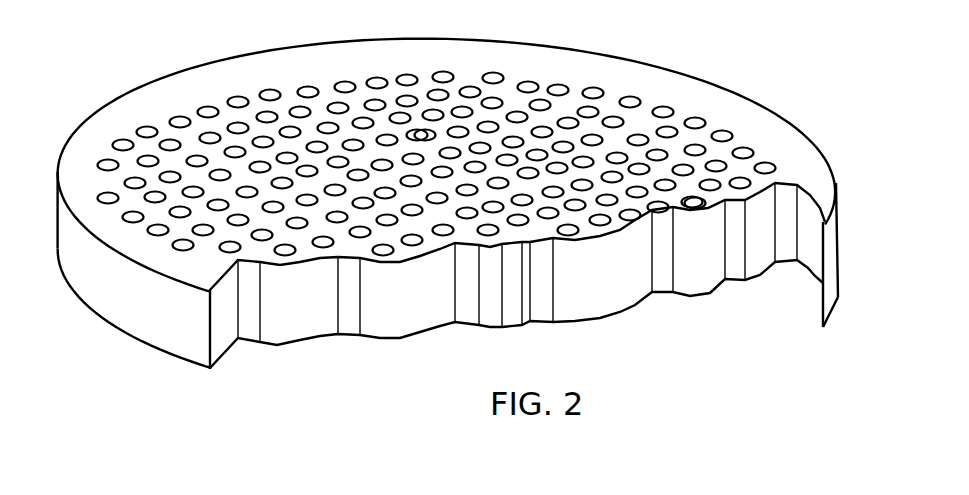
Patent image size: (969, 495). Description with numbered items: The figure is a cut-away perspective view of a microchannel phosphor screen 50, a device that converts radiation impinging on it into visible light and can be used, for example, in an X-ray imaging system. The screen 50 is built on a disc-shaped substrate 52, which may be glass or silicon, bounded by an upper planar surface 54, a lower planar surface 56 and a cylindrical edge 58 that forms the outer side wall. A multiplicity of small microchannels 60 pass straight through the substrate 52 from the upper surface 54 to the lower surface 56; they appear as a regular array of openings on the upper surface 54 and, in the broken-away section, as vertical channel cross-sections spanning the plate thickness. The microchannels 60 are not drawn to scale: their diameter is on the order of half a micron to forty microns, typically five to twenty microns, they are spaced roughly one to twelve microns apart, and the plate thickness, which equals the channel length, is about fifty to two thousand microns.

The microchannel phosphor screen 50 is at (475, 208).
The substrate 52 is at (810, 155).
The upper planar surface 54 is at (722, 98).
The lower planar surface 56 is at (303, 368).
The cylindrical edge 58 is at (73, 222).
The microchannels 60 is at (592, 93).